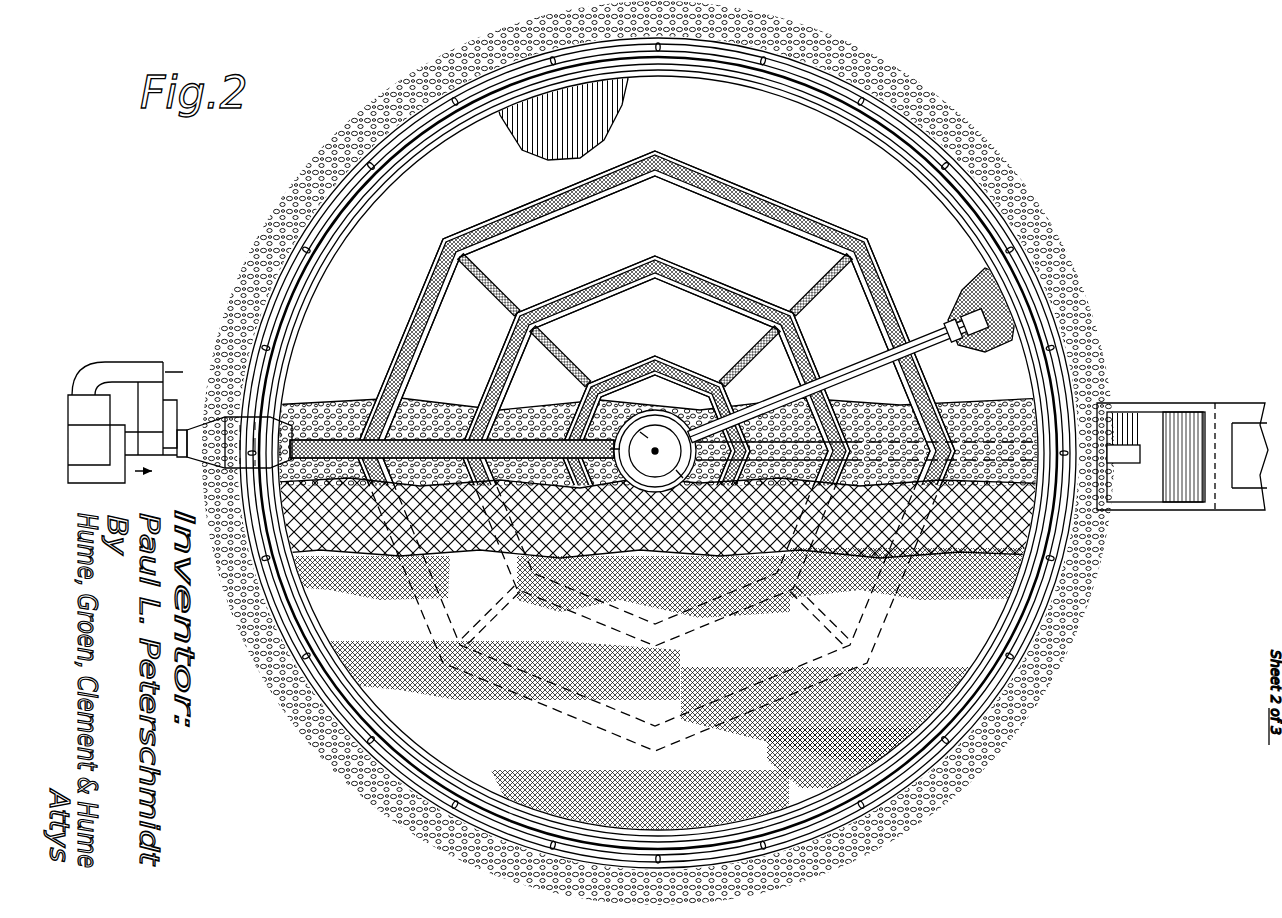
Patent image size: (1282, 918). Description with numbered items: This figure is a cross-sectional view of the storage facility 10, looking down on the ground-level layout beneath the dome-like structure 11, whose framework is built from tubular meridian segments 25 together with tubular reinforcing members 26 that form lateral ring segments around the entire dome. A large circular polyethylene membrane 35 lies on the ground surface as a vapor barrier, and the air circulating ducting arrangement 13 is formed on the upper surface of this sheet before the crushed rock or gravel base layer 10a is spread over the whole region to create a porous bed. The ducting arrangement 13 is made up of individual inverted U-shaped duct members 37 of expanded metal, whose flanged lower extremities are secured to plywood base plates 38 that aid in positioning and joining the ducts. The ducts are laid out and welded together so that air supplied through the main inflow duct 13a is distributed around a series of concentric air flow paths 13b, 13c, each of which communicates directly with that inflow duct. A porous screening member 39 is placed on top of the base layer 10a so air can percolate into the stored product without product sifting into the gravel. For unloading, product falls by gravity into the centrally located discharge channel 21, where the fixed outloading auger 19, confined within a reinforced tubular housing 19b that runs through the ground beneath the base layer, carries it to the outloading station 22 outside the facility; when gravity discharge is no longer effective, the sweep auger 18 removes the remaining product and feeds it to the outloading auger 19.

The storage facility 10 is at (1068, 182).
The base layer 10a is at (435, 408).
The dome-like structure 11 is at (1005, 160).
The ducting arrangement 13 is at (655, 451).
The main inflow duct 13a is at (512, 204).
The concentric air flow path 13b is at (693, 272).
The concentric air flow path 13c is at (673, 360).
The sweep auger 18 is at (861, 358).
The outloading auger 19 is at (972, 446).
The tubular housing 19b is at (1118, 463).
The discharge channel 21 is at (657, 422).
The outloading station 22 is at (1138, 430).
The meridian segments 25 is at (367, 140).
The tubular reinforcing members 26 is at (246, 274).
The membrane 35 is at (580, 140).
The duct members 37 is at (553, 297).
The base plates 38 is at (388, 297).
The screening member 39 is at (975, 292).